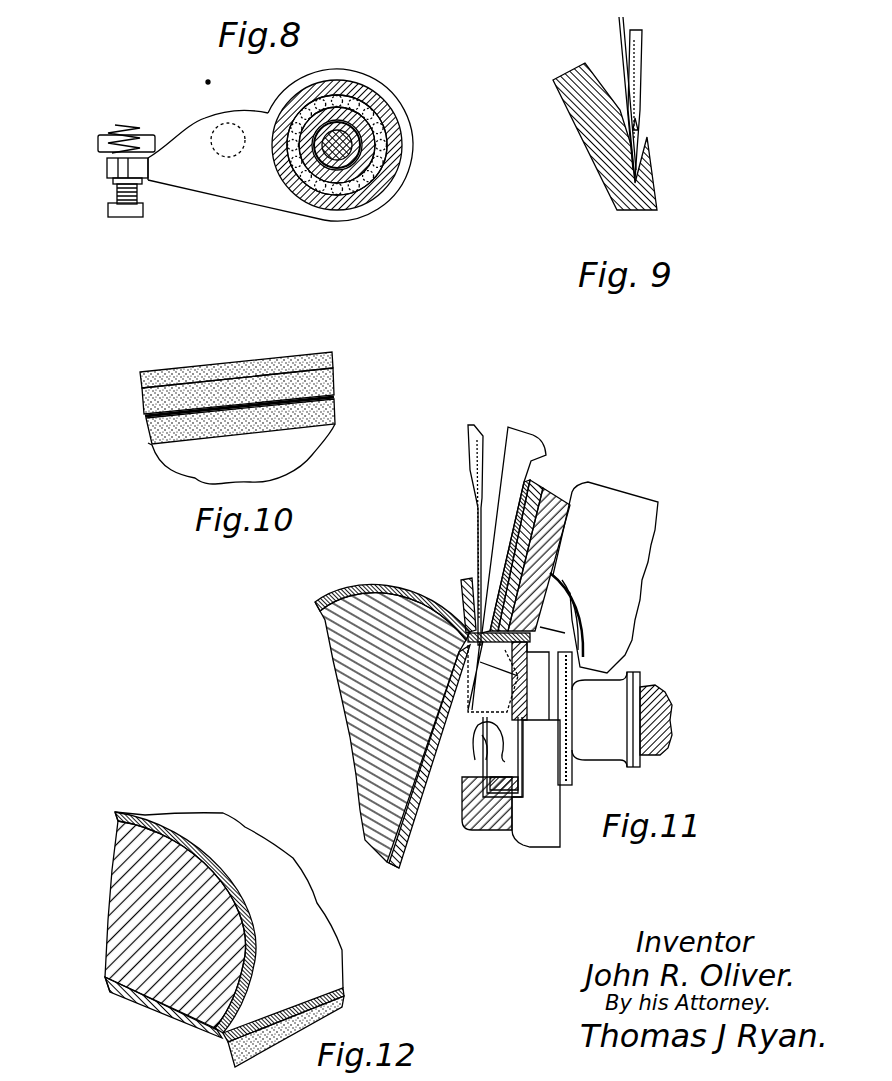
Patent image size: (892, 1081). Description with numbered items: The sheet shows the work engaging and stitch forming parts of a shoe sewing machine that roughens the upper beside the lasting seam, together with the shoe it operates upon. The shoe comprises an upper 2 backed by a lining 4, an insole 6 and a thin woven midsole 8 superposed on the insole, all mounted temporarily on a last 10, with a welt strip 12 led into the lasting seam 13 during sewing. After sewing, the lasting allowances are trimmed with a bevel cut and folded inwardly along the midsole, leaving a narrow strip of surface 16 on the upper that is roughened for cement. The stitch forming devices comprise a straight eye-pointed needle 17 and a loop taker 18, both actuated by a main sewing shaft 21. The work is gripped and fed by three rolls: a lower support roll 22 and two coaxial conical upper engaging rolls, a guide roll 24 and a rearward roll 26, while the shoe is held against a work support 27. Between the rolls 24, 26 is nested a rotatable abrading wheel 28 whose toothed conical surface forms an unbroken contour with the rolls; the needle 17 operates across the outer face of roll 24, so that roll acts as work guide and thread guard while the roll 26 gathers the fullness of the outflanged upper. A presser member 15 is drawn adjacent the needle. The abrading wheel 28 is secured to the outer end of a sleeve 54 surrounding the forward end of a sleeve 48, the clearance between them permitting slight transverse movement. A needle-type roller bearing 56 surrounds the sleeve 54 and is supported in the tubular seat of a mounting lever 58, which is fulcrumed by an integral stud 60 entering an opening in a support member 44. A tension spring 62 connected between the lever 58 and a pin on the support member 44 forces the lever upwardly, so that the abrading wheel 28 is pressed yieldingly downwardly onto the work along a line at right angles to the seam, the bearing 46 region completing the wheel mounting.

In FIG. 10, the upper 2 is at (336, 397).
In FIG. 11, the upper 2 is at (392, 590).
In FIG. 12, the upper 2 is at (285, 885).
In FIG. 11, the lining 4 is at (320, 612).
In FIG. 12, the lining 4 is at (112, 814).
In FIG. 11, the insole 6 is at (386, 866).
In FIG. 12, the insole 6 is at (105, 980).
In FIG. 10, the midsole 8 is at (305, 455).
In FIG. 11, the midsole 8 is at (405, 840).
In FIG. 12, the midsole 8 is at (118, 996).
In FIG. 11, the last 10 is at (347, 738).
In FIG. 12, the last 10 is at (108, 902).
In FIG. 9, the welt strip 12 is at (586, 141).
In FIG. 10, the welt strip 12 is at (331, 353).
In FIG. 11, the welt strip 12 is at (466, 584).
In FIG. 10, the lasting seam 13 is at (148, 444).
In FIG. 12, the lasting seam 13 is at (225, 1040).
In FIG. 11, the presser foot 15 is at (523, 440).
In FIG. 10, the strip of surface 16 is at (213, 428).
In FIG. 12, the strip of surface 16 is at (240, 1055).
In FIG. 9, the needle 17 is at (643, 42).
In FIG. 11, the needle 17 is at (487, 437).
In FIG. 11, the loop taker 18 is at (483, 744).
In FIG. 11, the main sewing shaft 21 is at (652, 752).
In FIG. 11, the lower support roll 22 is at (520, 792).
In FIG. 11, the guide roll 24 is at (528, 480).
In FIG. 11, the roll 26 is at (553, 498).
In FIG. 11, the work support 27 is at (468, 802).
In FIG. 11, the abrading wheel 28 is at (536, 487).
In FIG. 11, the support member 44 is at (636, 495).
In FIG. 8, the bearing race 46 is at (355, 120).
In FIG. 8, the sleeve 48 is at (380, 135).
In FIG. 8, the abrading wheel sleeve 54 is at (353, 100).
In FIG. 8, the needle-type roller bearing 56 is at (392, 147).
In FIG. 8, the mounting lever 58 is at (233, 201).
In FIG. 8, the stud 60 is at (222, 125).
In FIG. 8, the tension spring 62 is at (128, 132).